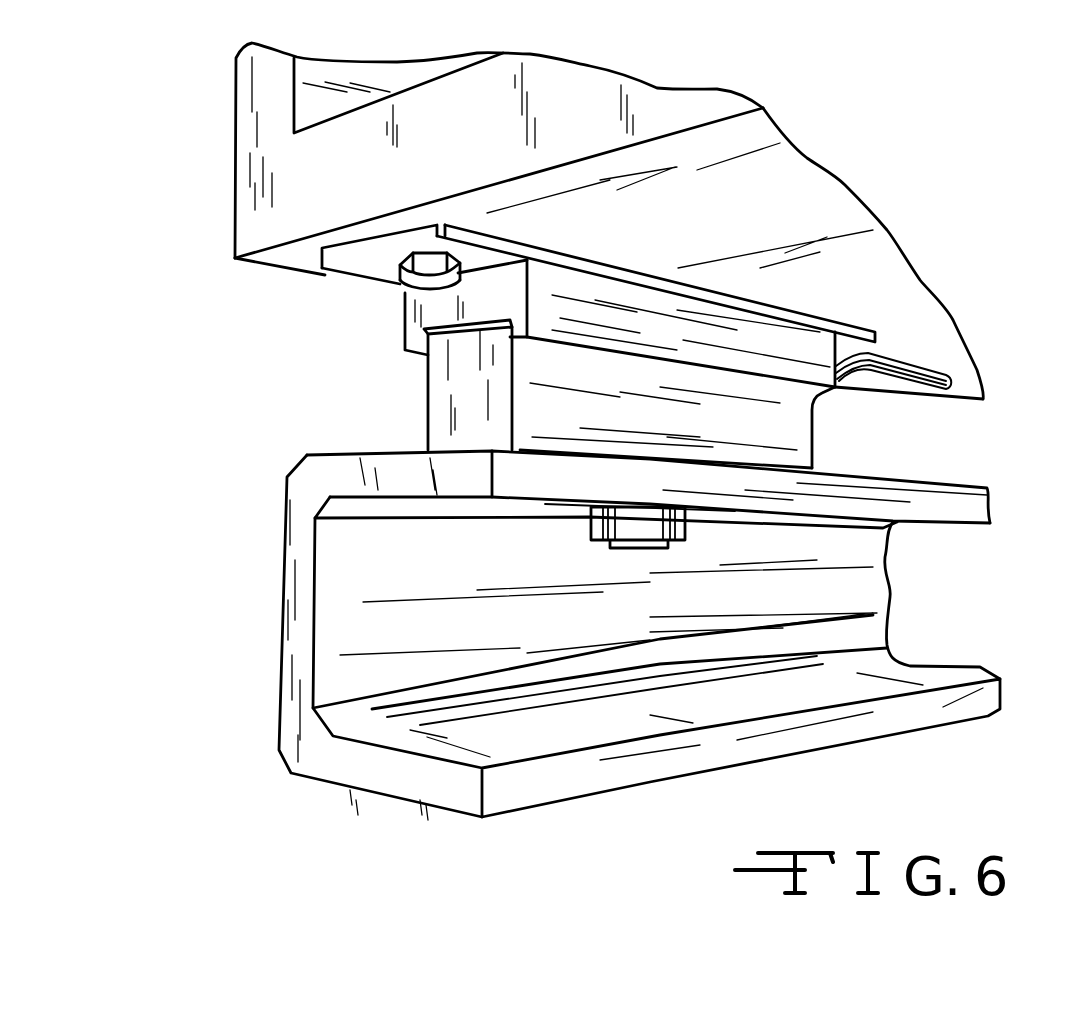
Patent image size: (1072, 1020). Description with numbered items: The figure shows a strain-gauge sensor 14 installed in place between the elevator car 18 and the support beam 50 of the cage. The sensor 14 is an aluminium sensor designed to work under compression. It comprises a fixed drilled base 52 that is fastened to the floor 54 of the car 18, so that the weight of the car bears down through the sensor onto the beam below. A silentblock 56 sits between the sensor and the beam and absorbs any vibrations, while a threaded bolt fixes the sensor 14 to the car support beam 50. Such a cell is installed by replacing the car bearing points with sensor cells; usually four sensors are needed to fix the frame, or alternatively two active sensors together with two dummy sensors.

The strain-gauge sensor 14 is at (400, 322).
The elevator car 18 is at (233, 177).
The support beam 50 is at (280, 617).
The fixed drilled base 52 is at (583, 258).
The floor 54 is at (747, 210).
The silentblock 56 is at (428, 399).